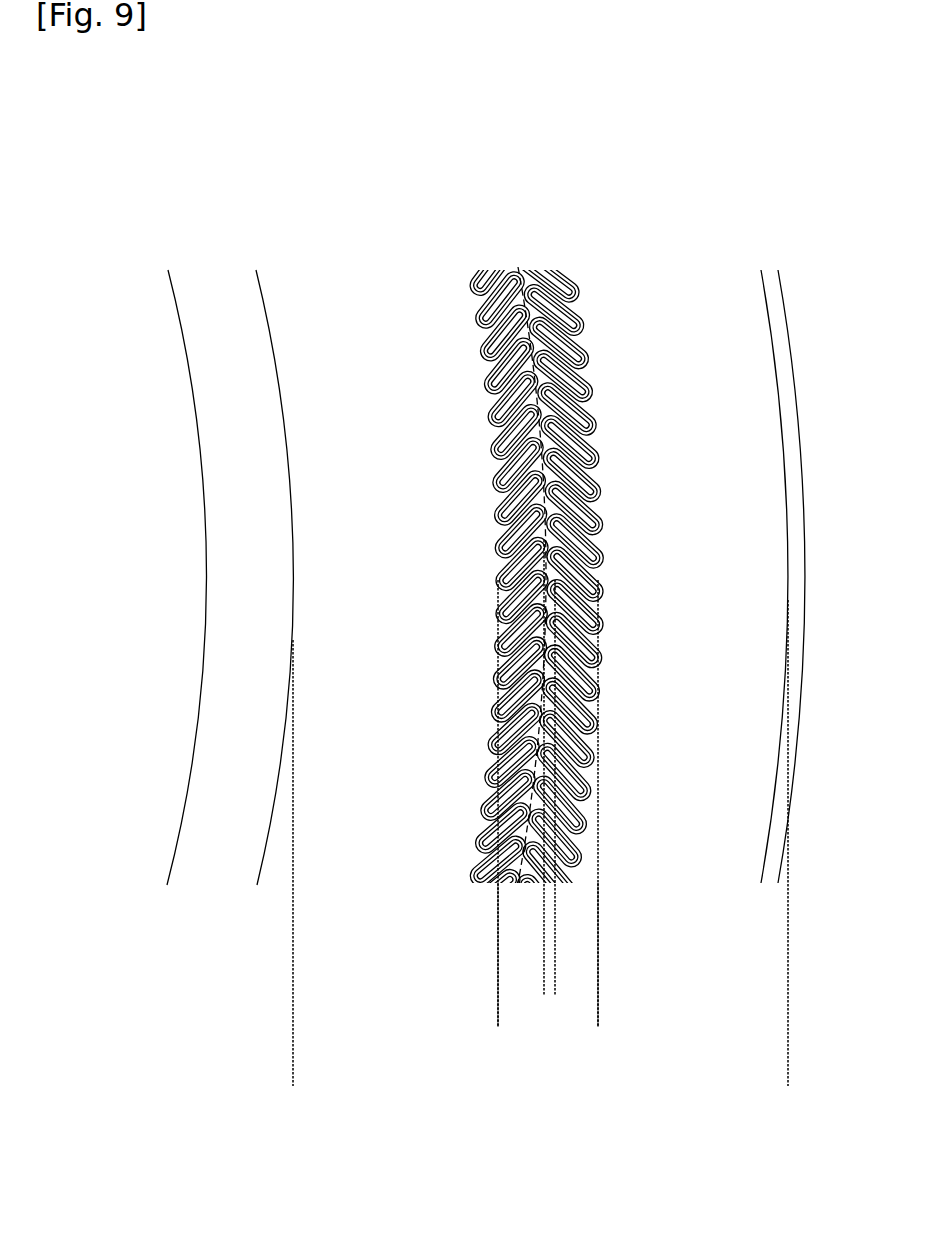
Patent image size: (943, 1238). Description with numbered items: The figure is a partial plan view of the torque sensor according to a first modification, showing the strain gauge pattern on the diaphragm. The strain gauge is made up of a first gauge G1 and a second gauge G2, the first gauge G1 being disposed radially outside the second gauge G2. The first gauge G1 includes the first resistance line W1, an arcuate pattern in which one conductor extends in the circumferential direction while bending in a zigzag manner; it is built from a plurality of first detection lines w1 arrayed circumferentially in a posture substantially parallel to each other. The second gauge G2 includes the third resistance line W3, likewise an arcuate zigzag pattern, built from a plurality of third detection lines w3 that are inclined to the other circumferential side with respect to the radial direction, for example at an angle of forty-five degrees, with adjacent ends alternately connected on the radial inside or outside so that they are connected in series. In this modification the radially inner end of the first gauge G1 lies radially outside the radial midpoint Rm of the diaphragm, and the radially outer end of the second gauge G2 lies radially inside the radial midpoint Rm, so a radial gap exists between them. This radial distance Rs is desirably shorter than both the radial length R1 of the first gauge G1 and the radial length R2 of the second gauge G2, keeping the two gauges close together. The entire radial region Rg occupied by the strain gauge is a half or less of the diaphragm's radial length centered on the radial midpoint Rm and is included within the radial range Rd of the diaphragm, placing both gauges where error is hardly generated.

The radial midpoint Rm is at (520, 262).
The third detection lines w3 is at (493, 437).
The first detection lines w1 is at (587, 443).
The third resistance line W3 is at (496, 489).
The first resistance line W1 is at (600, 491).
The second gauge G2 is at (471, 579).
The first gauge G1 is at (612, 593).
The radial distance Rs is at (505, 933).
The radial length of the second gauge R2 is at (544, 990).
The radial length of the first gauge R1 is at (598, 990).
The radial region Rg is at (598, 1023).
The radial range Rd is at (788, 1082).